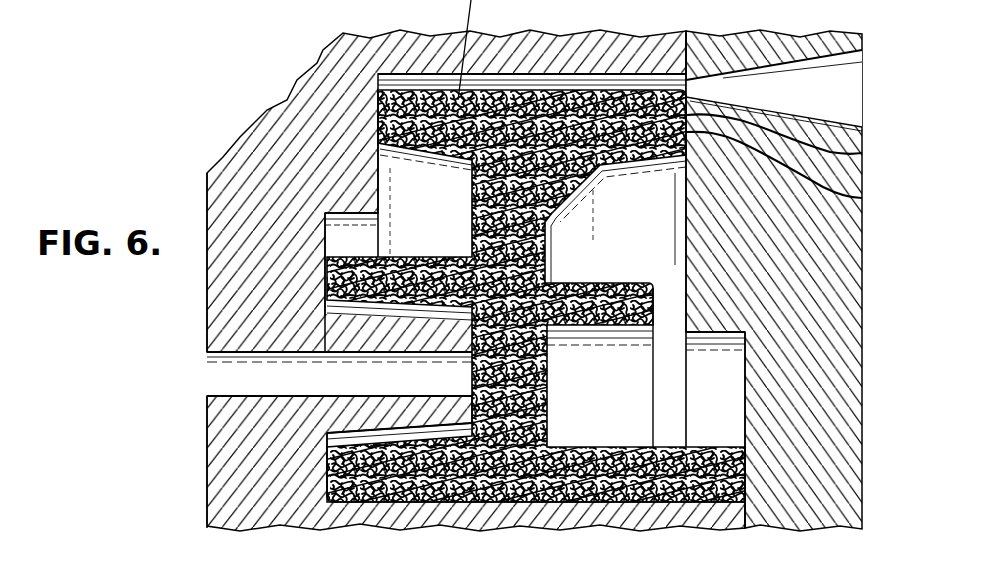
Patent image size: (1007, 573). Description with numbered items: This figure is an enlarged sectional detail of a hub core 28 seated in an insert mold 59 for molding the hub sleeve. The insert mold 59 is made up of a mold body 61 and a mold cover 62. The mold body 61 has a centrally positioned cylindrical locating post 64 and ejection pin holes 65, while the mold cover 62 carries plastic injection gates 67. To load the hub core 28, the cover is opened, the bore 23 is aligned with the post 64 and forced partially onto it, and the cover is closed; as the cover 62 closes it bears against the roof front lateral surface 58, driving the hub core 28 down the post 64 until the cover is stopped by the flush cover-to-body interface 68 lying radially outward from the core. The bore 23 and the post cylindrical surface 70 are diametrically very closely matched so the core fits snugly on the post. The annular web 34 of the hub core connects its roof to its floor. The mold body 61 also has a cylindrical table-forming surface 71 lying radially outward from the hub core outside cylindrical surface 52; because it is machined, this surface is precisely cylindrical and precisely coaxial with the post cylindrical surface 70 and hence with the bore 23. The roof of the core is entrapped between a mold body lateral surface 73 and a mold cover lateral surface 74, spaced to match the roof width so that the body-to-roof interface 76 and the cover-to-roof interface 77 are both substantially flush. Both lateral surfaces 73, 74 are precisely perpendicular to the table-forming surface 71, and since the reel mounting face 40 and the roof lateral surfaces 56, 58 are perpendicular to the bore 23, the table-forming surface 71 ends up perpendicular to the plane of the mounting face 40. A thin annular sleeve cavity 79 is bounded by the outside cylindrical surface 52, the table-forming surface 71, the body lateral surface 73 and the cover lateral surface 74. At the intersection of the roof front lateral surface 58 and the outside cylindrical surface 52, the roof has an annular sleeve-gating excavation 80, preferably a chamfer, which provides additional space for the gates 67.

The bore 23 is at (627, 503).
The hub core 28 is at (547, 347).
The annular web 34 is at (539, 233).
The reel mounting face 40 is at (323, 473).
The hub core outside cylindrical surface 52 is at (553, 93).
The roof lateral surface 56 is at (378, 105).
The roof front lateral surface 58 is at (862, 153).
The insert mold 59 is at (210, 158).
The mold body 61 is at (413, 46).
The mold cover 62 is at (850, 262).
The locating post 64 is at (438, 513).
The ejection pin holes 65 is at (339, 350).
The plastic injection gates 67 is at (846, 78).
The cover-to-body interface 68 is at (686, 53).
The post cylindrical surface 70 is at (552, 490).
The table-forming surface 71 is at (465, 87).
The mold body lateral surface 73 is at (384, 183).
The mold cover lateral surface 74 is at (677, 204).
The body-to-roof interface 76 is at (378, 118).
The cover-to-roof interface 77 is at (862, 197).
The annular sleeve cavity 79 is at (632, 90).
The sleeve-gating excavation 80 is at (686, 89).